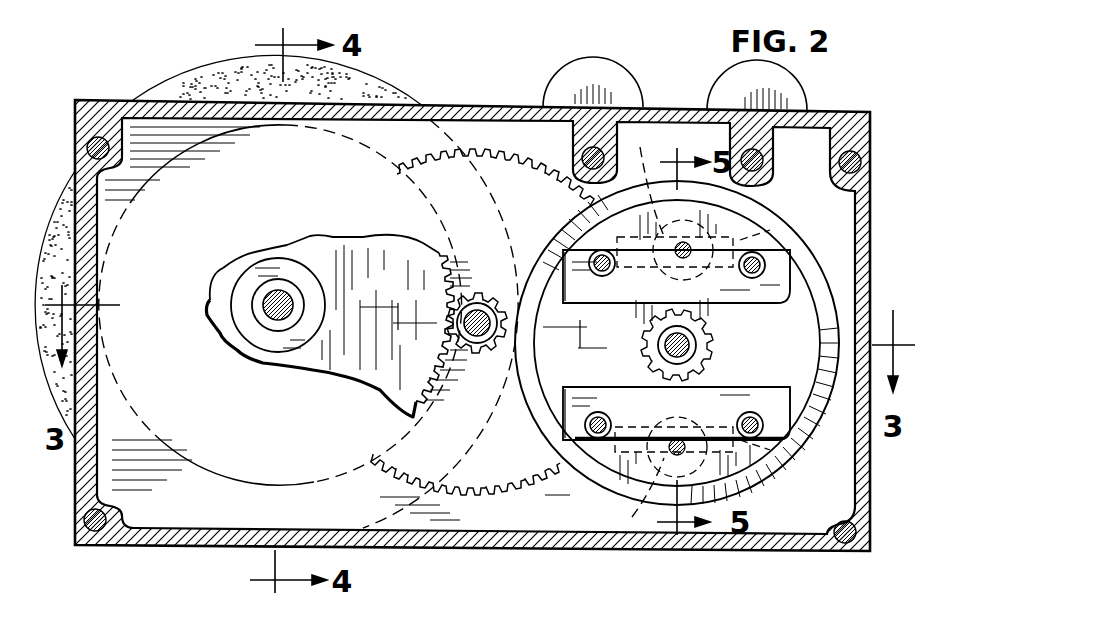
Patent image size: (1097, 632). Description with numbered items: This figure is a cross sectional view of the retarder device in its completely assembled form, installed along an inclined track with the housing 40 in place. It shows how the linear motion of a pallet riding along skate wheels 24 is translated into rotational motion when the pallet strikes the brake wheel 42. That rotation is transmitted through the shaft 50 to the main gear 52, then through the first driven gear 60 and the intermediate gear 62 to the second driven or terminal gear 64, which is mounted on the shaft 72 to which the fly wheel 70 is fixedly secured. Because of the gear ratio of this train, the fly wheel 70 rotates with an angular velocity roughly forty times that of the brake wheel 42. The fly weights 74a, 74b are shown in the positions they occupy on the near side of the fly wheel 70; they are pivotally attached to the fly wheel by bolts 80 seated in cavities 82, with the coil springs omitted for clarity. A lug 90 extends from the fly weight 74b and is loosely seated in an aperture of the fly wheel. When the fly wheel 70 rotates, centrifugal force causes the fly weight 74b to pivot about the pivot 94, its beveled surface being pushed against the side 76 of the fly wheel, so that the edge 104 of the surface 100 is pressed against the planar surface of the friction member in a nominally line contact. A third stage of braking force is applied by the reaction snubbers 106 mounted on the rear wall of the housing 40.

The skate wheels 24 is at (766, 90).
The housing 40 is at (475, 100).
The brake wheel 42 is at (372, 86).
The shaft 50 is at (268, 316).
The main gear 52 is at (377, 275).
The first driven gear 60 is at (490, 290).
The intermediate gear 62 is at (541, 197).
The second driven or terminal gear 64 is at (712, 353).
The fly wheel 70 is at (827, 262).
The shaft 72 is at (664, 344).
The fly weight 74a is at (750, 214).
The fly weight 74b is at (606, 472).
The side of fly wheel 76 is at (540, 352).
The bolts 80 is at (602, 277).
The cavities 82 is at (612, 272).
The lug 90 is at (745, 301).
The pivot 94 is at (752, 232).
The surface 100 is at (792, 298).
The edge 104 is at (583, 250).
The reaction snubbers 106 is at (632, 519).